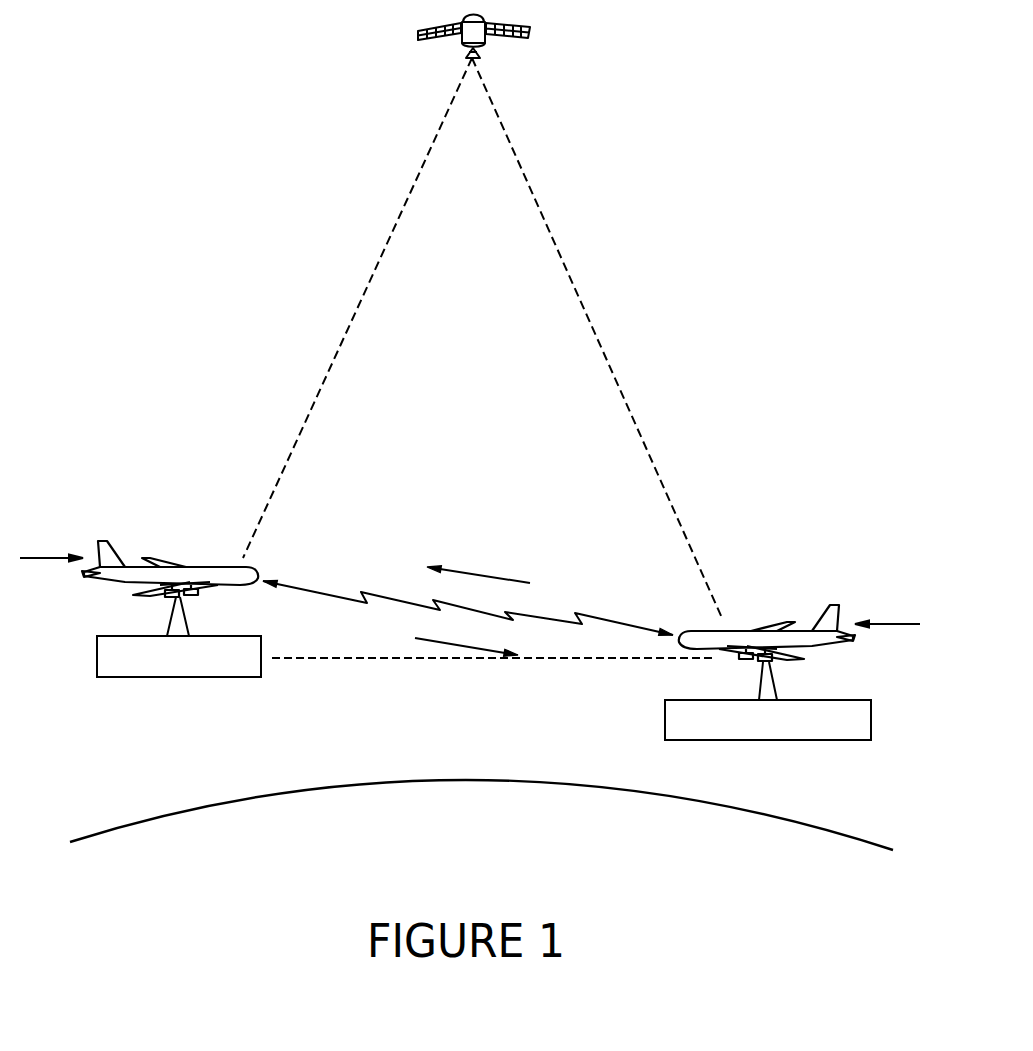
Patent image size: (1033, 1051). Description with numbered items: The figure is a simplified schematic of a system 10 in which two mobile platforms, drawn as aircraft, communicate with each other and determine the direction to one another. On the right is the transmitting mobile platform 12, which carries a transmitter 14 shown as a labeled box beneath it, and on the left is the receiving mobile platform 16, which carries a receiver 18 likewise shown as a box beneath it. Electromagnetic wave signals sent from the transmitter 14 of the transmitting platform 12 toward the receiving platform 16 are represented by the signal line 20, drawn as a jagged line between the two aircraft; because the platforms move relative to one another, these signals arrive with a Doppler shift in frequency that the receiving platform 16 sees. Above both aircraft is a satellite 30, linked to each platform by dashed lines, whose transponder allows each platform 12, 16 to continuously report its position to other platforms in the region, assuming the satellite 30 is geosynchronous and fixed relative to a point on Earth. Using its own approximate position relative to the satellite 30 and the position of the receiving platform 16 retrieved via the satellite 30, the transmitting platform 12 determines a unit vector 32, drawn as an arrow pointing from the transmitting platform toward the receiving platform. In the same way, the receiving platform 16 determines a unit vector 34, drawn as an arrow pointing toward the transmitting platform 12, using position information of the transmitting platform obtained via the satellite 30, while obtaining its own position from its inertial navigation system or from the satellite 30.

The system 10 is at (690, 416).
The transmitting mobile platform 12 is at (735, 640).
The transmitter 14 is at (774, 742).
The receiving mobile platform 16 is at (198, 568).
The receiver 18 is at (226, 678).
The signal line 20 is at (400, 600).
The satellite 30 is at (481, 38).
The unit vector 32 is at (483, 575).
The unit vector 34 is at (473, 648).